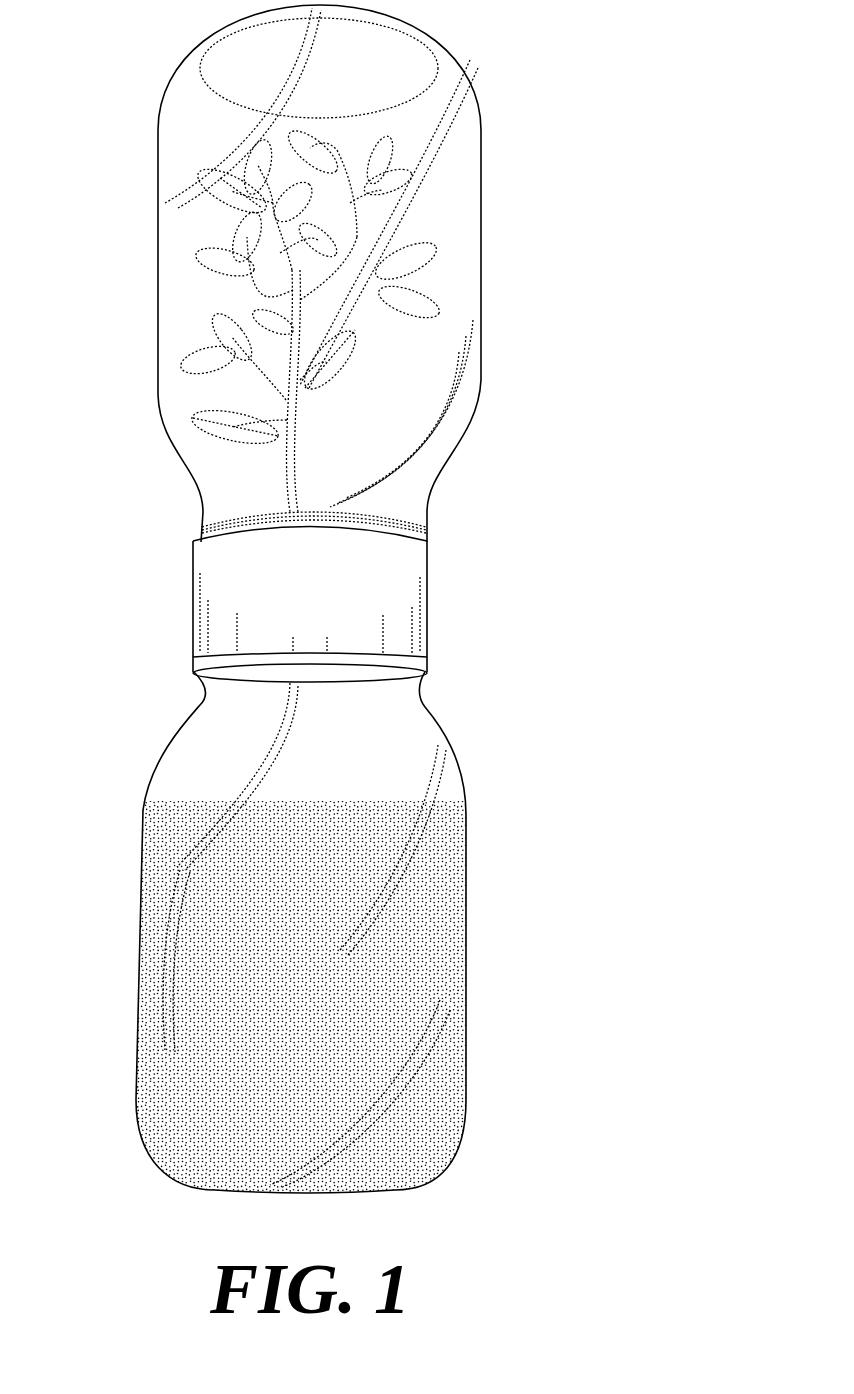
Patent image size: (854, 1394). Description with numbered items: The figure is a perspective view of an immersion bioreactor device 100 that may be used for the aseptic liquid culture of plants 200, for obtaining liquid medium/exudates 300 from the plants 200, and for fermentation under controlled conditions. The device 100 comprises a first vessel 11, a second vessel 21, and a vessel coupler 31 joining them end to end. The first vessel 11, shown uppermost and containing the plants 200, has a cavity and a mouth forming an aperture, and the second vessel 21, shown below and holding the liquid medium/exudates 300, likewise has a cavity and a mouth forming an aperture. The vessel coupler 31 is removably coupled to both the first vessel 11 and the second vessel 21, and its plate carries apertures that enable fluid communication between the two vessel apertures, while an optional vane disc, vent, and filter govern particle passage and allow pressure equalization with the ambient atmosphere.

The immersion bioreactor device 100 is at (519, 72).
The first vessel 11 is at (455, 439).
The plants 200 is at (208, 267).
The vessel coupler 31 is at (407, 596).
The second vessel 21 is at (452, 784).
The liquid medium/exudates 300 is at (193, 995).